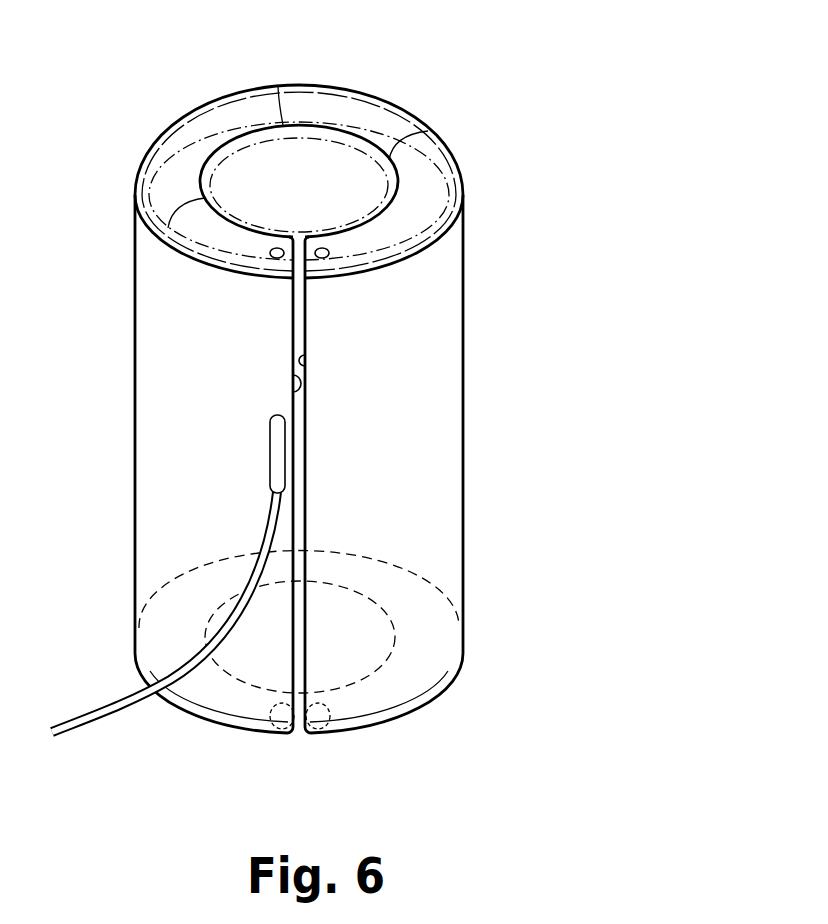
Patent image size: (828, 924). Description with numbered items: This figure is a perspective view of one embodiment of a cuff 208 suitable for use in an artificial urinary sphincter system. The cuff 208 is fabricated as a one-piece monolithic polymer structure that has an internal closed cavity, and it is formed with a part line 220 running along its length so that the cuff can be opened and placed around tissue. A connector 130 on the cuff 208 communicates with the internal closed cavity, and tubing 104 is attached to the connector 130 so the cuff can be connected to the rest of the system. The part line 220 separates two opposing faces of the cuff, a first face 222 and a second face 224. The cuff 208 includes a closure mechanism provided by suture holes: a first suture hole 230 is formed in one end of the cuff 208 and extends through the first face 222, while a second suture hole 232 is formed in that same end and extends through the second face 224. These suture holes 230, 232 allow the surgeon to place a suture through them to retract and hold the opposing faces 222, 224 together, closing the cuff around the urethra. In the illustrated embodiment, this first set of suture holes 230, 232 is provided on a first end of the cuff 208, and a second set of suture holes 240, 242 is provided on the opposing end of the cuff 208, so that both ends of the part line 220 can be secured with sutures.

The cuff 208 is at (415, 84).
The part line 220 is at (314, 466).
The first face 222 is at (295, 397).
The second face 224 is at (303, 372).
The first suture hole 230 is at (275, 259).
The second suture hole 232 is at (325, 259).
The suture hole of second set 240 is at (263, 736).
The suture hole of second set 242 is at (332, 736).
The tubing 104 is at (115, 710).
The connector 130 is at (275, 457).